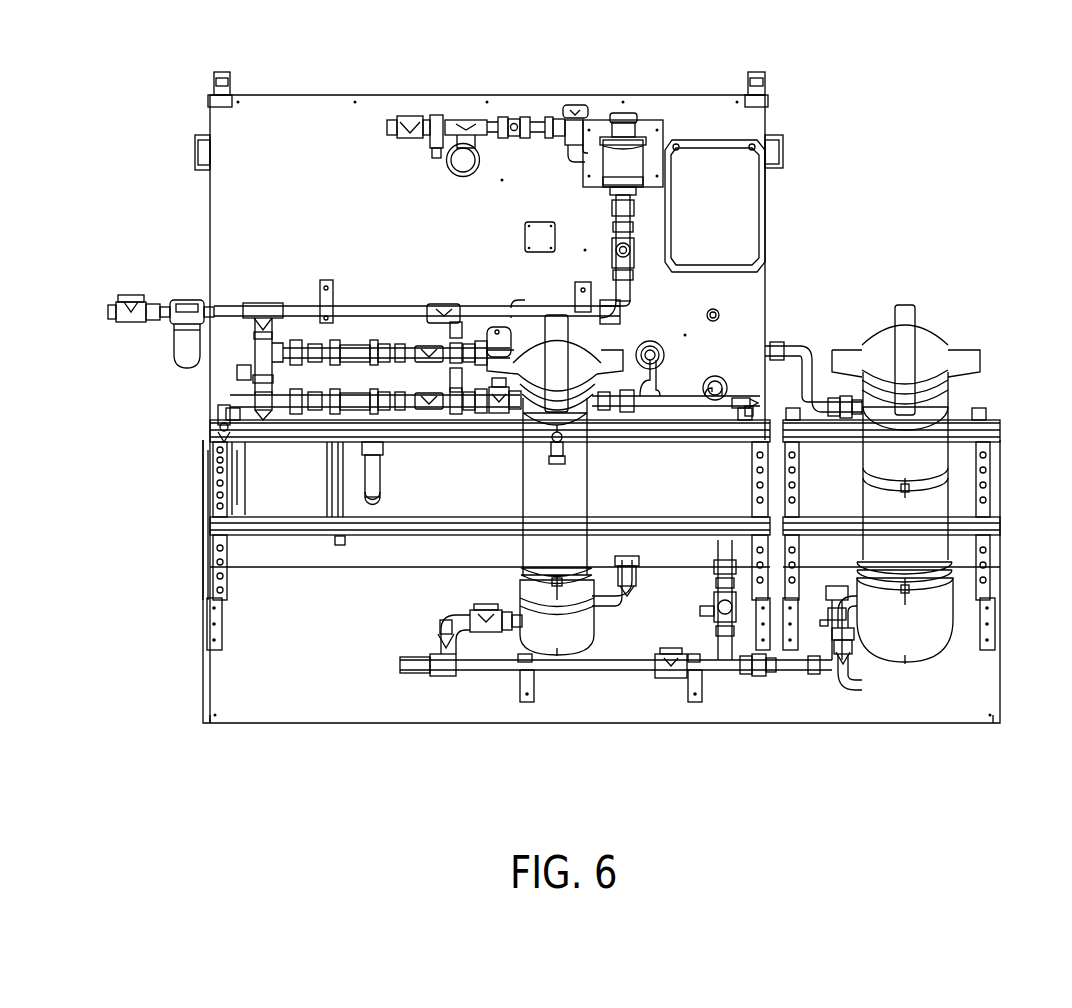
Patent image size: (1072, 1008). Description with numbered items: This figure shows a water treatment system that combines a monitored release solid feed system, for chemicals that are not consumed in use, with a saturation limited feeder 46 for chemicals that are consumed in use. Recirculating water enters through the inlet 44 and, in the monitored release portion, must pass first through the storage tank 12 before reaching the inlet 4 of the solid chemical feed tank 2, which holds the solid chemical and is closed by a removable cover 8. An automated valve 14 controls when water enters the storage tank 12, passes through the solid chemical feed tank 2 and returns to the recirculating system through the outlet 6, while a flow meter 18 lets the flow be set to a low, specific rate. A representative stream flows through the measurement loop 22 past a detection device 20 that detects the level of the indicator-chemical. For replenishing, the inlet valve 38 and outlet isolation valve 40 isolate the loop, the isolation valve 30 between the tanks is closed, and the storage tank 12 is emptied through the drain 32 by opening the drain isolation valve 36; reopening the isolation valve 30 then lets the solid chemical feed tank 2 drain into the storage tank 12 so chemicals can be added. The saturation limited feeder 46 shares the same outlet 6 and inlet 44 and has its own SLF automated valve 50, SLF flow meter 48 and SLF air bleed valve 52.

The solid chemical feed tank 2 is at (958, 505).
The inlet 4 is at (852, 607).
The outlet 6 is at (390, 130).
The removable cover 8 is at (915, 345).
The storage tank 12 is at (650, 475).
The automated valve 14 is at (485, 395).
The flow meter 18 is at (355, 400).
The detection device 20 is at (630, 257).
The measurement loop 22 is at (767, 298).
The isolation valve 30 is at (843, 640).
The drain 32 is at (400, 665).
The drain isolation valve 36 is at (670, 672).
The inlet valve 38 is at (135, 325).
The outlet isolation valve 40 is at (413, 127).
The inlet 44 is at (108, 312).
The saturation limited feeder 46 is at (556, 630).
The SLF flow meter 48 is at (355, 345).
The SLF automated valve 50 is at (497, 330).
The SLF air bleed valve 52 is at (550, 442).